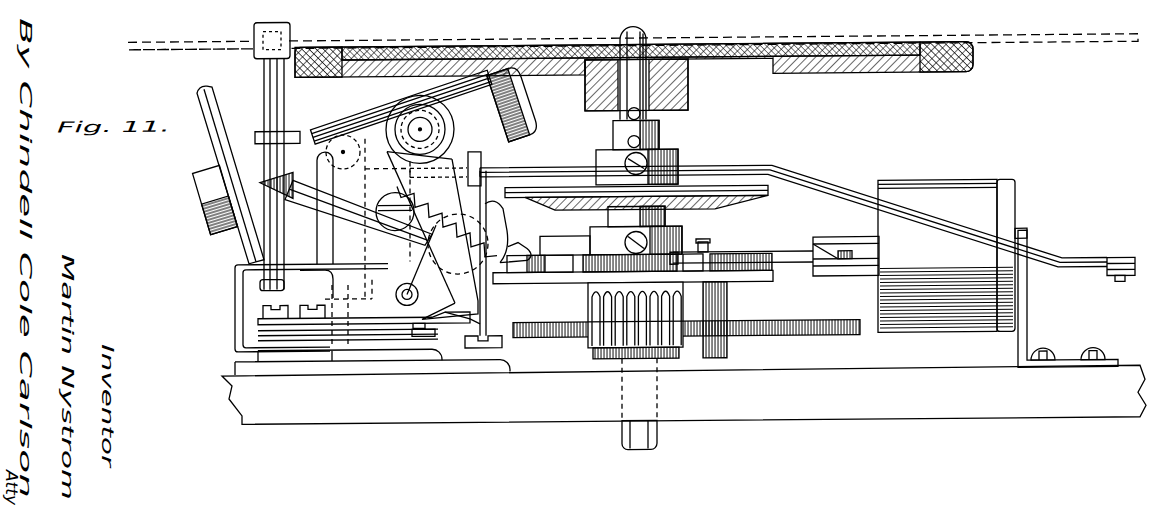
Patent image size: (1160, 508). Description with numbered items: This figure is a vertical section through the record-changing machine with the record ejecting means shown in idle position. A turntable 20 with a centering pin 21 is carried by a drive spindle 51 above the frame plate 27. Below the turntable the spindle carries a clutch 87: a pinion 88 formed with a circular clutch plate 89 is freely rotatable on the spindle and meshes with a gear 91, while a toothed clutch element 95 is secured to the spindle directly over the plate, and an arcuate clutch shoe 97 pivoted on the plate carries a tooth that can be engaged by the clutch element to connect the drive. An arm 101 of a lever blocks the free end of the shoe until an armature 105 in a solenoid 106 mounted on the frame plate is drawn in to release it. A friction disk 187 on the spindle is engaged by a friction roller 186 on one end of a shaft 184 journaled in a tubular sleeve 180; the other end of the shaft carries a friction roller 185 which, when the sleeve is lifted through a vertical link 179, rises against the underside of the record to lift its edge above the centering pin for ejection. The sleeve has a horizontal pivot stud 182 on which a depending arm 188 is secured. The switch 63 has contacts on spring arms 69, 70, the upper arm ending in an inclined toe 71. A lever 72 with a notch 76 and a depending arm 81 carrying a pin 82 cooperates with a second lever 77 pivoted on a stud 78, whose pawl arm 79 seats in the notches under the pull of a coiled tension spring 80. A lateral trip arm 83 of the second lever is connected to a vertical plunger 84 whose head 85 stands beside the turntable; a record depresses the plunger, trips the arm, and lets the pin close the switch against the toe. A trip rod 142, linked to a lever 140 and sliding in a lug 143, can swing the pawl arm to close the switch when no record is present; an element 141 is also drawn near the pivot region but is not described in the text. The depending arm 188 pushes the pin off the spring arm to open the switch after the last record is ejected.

The turntable 20 is at (880, 76).
The centering pin 21 is at (642, 34).
The frame plate 27 is at (850, 420).
The drive spindle 51 is at (665, 96).
The switch 63 is at (435, 332).
The spring arm 69 is at (373, 350).
The upper spring arm 70 is at (372, 316).
The toe 71 is at (487, 316).
The lever 72 is at (482, 292).
The notch 76 is at (500, 226).
The second lever 77 is at (396, 230).
The stud 78 is at (390, 222).
The pawl arm 79 is at (492, 210).
The coiled tension spring 80 is at (510, 240).
The depending arm 81 is at (420, 254).
The pin 82 is at (400, 287).
The lateral trip arm 83 is at (309, 203).
The vertical plunger 84 is at (265, 76).
The head 85 is at (256, 50).
The clutch 87 is at (692, 249).
The pinion 88 is at (593, 346).
The circular clutch plate 89 is at (545, 284).
The gear 91 is at (780, 338).
The clutch element 95 is at (589, 238).
The arcuate clutch shoe 97 is at (590, 250).
The arm 101 is at (781, 252).
The armature 105 is at (856, 239).
The solenoid 106 is at (950, 183).
The lever 140 is at (1118, 261).
The arm edge 141 is at (393, 158).
The trip rod 142 is at (824, 183).
The lug 143 is at (505, 163).
The vertical link 179 is at (318, 238).
The tubular sleeve 180 is at (360, 120).
The horizontal pivot stud 182 is at (418, 126).
The shaft 184 is at (247, 160).
The friction roller 185 is at (244, 232).
The friction roller 186 is at (530, 101).
The friction disk 187 is at (758, 195).
The depending arm 188 is at (434, 120).